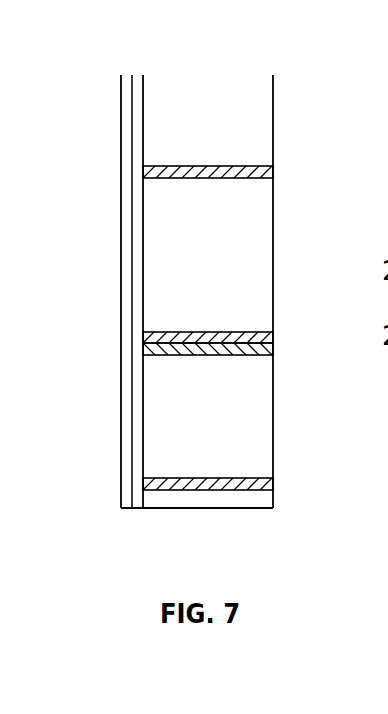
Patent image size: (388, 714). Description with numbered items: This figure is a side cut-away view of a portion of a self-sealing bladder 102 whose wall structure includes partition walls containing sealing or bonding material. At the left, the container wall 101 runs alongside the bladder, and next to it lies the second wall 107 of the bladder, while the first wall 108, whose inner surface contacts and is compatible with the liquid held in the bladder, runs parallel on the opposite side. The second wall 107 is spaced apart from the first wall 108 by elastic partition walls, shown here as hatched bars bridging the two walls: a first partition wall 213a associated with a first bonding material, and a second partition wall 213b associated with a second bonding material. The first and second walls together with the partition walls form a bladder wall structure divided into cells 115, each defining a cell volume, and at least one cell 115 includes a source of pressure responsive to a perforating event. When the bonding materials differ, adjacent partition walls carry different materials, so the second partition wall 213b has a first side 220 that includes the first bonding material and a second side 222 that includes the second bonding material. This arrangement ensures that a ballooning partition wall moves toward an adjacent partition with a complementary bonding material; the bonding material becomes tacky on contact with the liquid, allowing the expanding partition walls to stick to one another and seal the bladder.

The wall 101 is at (121, 228).
The second wall 107 is at (138, 73).
The first wall 108 is at (273, 210).
The self-sealing bladder 102 is at (273, 268).
The cell 115 is at (198, 498).
The first partition wall 213a is at (207, 164).
The second partition wall 213b is at (245, 356).
The first side 220 is at (170, 332).
The second side 222 is at (165, 357).